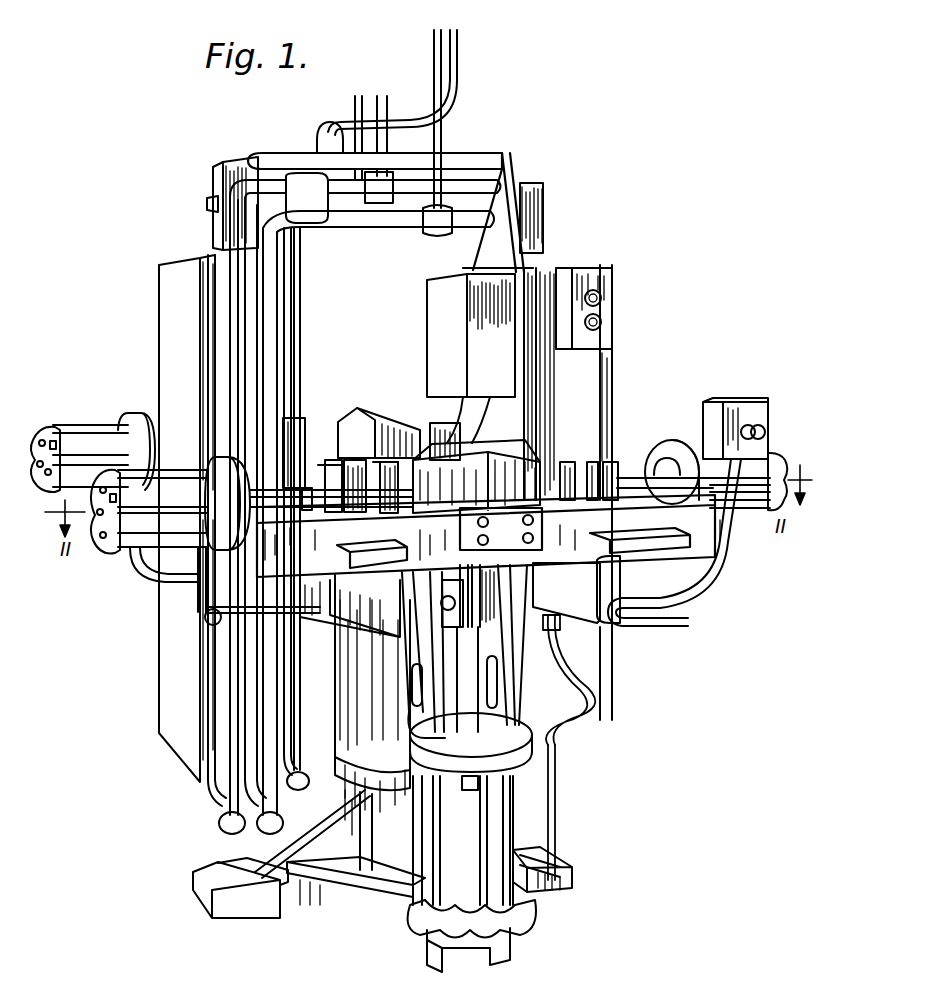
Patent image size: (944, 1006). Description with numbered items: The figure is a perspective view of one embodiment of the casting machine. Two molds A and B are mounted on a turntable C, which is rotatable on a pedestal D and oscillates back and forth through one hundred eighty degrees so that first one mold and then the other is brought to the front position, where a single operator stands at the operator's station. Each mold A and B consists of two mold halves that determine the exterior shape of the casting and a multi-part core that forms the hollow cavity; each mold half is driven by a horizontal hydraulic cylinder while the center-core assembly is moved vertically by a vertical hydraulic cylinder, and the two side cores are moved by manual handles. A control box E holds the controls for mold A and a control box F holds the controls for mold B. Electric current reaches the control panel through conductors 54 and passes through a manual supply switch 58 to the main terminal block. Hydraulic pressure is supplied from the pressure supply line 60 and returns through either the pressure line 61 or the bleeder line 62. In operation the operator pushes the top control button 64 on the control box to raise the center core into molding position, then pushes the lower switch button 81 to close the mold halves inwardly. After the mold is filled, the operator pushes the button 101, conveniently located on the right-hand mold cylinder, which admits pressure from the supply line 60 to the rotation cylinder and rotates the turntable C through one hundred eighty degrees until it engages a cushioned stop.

The conductors 54 is at (459, 56).
The manual supply switch 58 is at (205, 202).
The pressure supply line 60 is at (368, 88).
The pressure line 61 is at (433, 50).
The bleeder line 62 is at (385, 96).
The control button 64 is at (610, 293).
The switch button 81 is at (625, 350).
The button 101 is at (760, 428).
The mold A is at (510, 440).
The mold B is at (390, 408).
The turntable C is at (293, 555).
The pedestal D is at (325, 722).
The control box E is at (639, 303).
The control box F is at (145, 362).